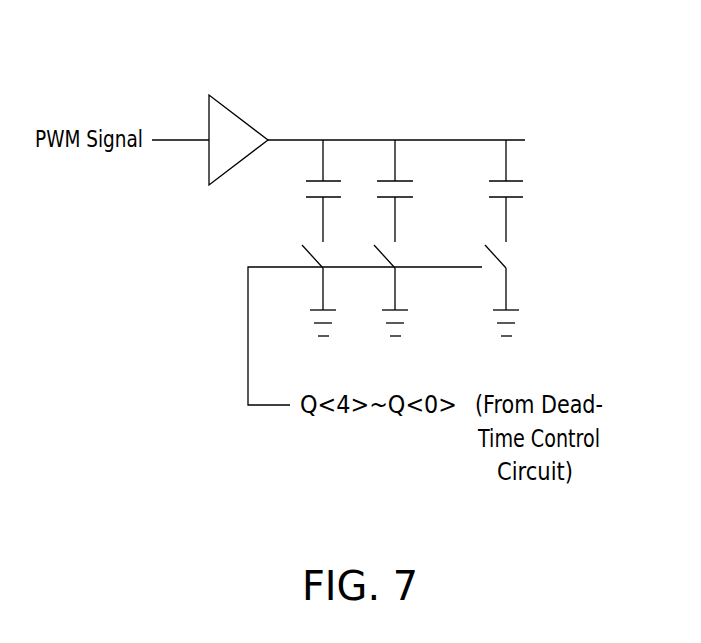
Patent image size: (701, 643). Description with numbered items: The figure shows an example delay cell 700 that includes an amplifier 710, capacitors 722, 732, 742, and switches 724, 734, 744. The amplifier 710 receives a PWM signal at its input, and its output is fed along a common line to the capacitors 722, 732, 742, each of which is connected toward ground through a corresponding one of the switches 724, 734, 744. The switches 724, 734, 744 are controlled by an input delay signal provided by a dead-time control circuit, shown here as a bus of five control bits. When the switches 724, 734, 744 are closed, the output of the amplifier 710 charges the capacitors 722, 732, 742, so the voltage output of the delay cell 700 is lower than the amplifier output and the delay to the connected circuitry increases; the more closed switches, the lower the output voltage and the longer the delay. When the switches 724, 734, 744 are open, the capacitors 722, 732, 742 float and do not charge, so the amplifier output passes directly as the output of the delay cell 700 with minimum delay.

The delay cell 700 is at (518, 90).
The amplifier 710 is at (241, 117).
The capacitor 722 is at (308, 199).
The switch 724 is at (320, 268).
The capacitor 732 is at (407, 198).
The switch 734 is at (398, 268).
The capacitor 742 is at (518, 180).
The switch 744 is at (510, 267).